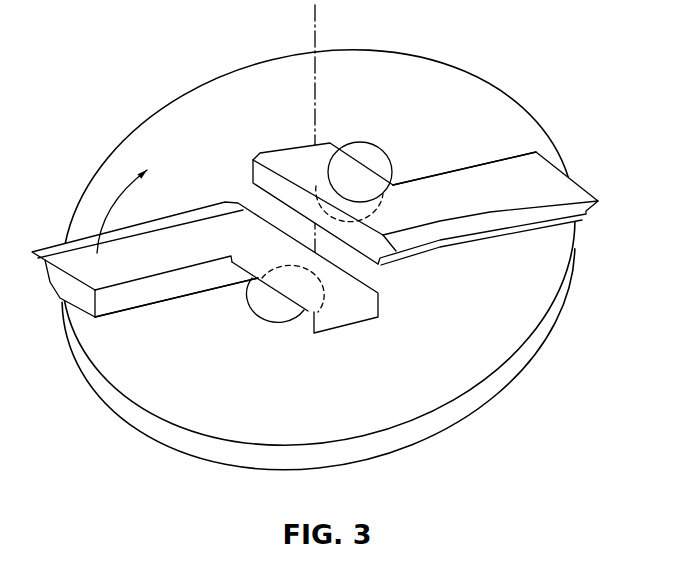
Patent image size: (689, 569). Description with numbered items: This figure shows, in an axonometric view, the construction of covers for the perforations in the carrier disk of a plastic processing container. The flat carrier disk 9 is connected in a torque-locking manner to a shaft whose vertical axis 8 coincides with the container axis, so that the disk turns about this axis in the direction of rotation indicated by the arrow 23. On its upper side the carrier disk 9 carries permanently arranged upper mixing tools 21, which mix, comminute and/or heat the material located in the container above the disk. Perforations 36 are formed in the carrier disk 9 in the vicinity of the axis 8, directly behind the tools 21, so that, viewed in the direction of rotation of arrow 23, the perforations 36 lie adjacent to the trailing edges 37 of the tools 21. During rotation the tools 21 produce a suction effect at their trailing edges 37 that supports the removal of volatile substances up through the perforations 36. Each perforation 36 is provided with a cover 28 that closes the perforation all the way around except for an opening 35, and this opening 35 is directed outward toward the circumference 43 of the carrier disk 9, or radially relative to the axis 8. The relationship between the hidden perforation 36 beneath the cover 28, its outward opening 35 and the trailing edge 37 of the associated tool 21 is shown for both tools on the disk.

The vertical axis 8 is at (312, 25).
The carrier disk 9 is at (132, 437).
The upper mixing tools 21 is at (450, 200).
The arrow 23 is at (117, 207).
The cover 28 is at (292, 145).
The opening 35 is at (353, 157).
The perforations 36 is at (372, 163).
The trailing edges 37 is at (158, 302).
The circumference 43 is at (198, 432).